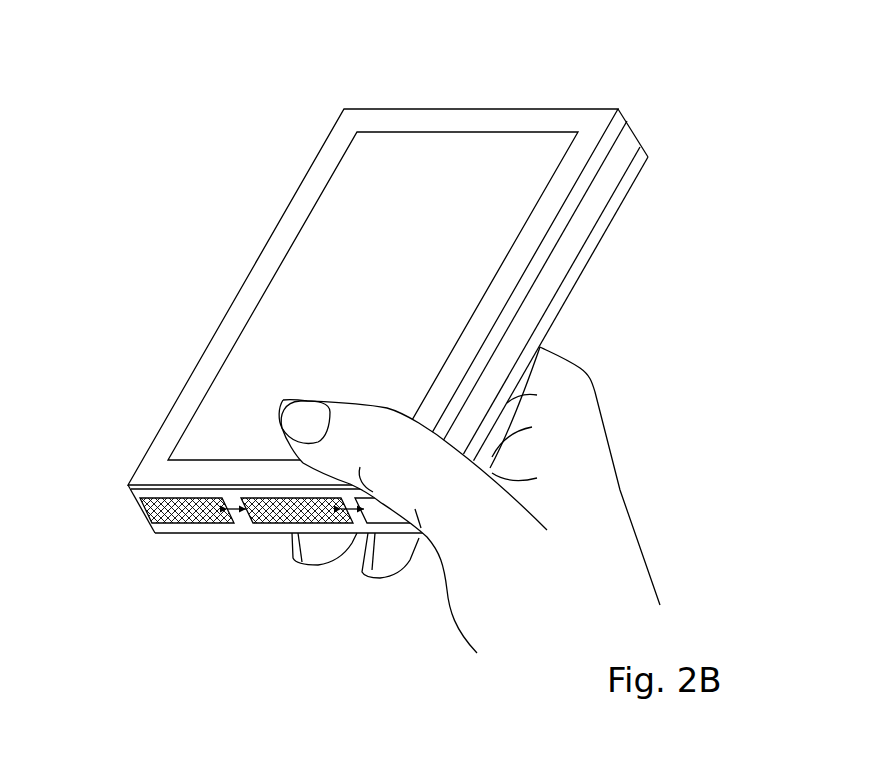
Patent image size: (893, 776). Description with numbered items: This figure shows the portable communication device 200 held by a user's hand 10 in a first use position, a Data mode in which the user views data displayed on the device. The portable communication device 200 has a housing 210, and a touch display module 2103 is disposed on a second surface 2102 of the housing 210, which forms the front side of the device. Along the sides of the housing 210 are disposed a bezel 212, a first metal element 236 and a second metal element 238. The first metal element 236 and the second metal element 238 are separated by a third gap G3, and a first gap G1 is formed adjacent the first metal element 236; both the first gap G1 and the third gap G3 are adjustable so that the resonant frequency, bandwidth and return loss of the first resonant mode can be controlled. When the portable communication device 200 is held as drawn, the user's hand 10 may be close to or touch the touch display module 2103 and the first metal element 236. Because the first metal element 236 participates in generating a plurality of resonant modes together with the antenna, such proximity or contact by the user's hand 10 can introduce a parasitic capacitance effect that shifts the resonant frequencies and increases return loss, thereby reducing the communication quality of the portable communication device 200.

The portable communication device 200 is at (363, 340).
The housing 210 is at (363, 340).
The second surface 2102 is at (505, 120).
The touch display module 2103 is at (378, 153).
The bezel 212 is at (557, 263).
The first metal element 236 is at (286, 518).
The second metal element 238 is at (141, 500).
The first gap G1 is at (348, 507).
The third gap G3 is at (247, 523).
The user's hand 10 is at (597, 490).